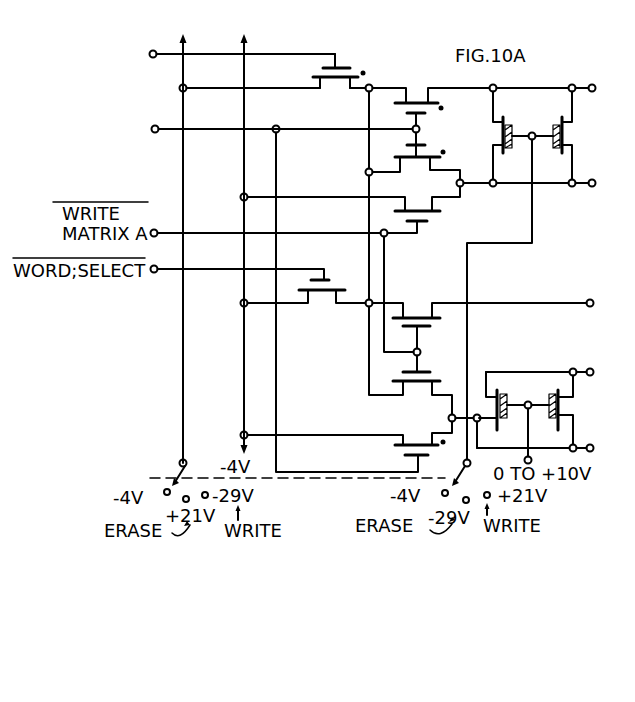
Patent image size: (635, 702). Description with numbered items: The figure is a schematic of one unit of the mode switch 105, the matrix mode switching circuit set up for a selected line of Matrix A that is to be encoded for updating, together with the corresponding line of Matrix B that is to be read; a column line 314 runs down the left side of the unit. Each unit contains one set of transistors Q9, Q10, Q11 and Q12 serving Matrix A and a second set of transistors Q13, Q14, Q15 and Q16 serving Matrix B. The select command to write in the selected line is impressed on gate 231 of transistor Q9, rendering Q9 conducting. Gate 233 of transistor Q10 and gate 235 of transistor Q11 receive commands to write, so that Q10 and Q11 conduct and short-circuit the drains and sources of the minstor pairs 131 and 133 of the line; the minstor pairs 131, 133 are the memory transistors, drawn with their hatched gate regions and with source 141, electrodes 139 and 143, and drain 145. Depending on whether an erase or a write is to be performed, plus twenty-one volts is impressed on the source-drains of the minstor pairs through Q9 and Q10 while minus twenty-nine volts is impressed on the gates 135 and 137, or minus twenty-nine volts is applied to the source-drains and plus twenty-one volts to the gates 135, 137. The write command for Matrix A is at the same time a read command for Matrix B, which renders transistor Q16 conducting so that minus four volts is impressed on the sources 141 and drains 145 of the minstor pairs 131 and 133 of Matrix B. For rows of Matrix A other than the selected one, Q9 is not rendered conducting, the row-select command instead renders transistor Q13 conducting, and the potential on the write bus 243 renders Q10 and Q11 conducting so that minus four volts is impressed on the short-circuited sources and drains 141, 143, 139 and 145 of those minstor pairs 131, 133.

The mode switch 105 is at (122, 326).
The column line 314 is at (183, 368).
The gate of transistor Q9 231 is at (345, 69).
The gate of transistor Q10 233 is at (424, 77).
The gate of transistor Q11 235 is at (415, 172).
The write bus 243 is at (300, 129).
The source of minstor pair 141 is at (491, 112).
The source/drain of minstor pair 139 is at (493, 157).
The gate of minstor pair 131 135 is at (512, 126).
The gate of minstor pair 133 137 is at (552, 126).
The source/drain of minstor pair 143 is at (572, 124).
The drain of minstor pair 145 is at (572, 145).
The minstor pair 131 is at (522, 179).
The minstor pair 133 is at (563, 179).
The transistor Q9 is at (313, 76).
The transistor Q10 is at (408, 114).
The transistor Q11 is at (432, 157).
The transistor Q12 is at (431, 216).
The transistor Q13 is at (344, 287).
The transistor Q14 is at (430, 320).
The transistor Q15 is at (428, 386).
The transistor Q16 is at (404, 456).